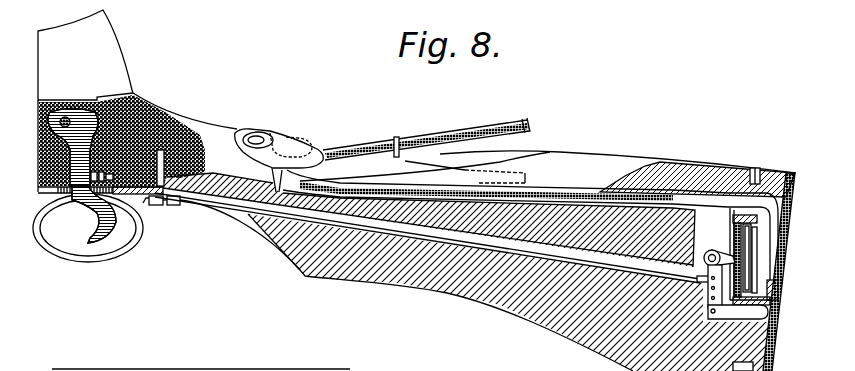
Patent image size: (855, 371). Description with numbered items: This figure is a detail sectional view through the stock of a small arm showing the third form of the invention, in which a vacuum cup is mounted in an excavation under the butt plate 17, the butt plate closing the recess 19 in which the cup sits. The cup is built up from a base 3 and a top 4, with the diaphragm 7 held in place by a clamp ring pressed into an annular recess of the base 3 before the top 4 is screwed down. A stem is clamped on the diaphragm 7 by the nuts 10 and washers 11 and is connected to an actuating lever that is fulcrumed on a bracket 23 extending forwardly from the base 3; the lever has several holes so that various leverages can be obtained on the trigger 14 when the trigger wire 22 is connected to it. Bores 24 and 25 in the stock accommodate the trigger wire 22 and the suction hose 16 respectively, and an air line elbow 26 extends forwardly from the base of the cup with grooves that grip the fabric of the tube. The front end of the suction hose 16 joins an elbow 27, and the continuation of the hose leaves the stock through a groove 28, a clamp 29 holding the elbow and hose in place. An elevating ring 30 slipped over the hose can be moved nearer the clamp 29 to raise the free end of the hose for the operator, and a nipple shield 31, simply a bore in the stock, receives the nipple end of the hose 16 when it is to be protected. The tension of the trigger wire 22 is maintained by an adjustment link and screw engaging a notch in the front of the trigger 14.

The base 3 is at (777, 293).
The top 4 is at (737, 222).
The diaphragm 7 is at (740, 233).
The nuts 10 is at (740, 248).
The washers 11 is at (760, 260).
The trigger 14 is at (90, 203).
The suction hose 16 is at (343, 152).
The butt plate 17 is at (775, 347).
The recess 19 is at (778, 205).
The trigger wire 22 is at (272, 214).
The bracket 23 is at (762, 317).
The bore 24 is at (303, 211).
The bore 25 is at (613, 192).
The air line elbow 26 is at (786, 222).
The elbow 27 is at (308, 142).
The groove 28 is at (521, 155).
The clamp 29 is at (295, 126).
The elevating ring 30 is at (400, 136).
The nipple shield 31 is at (423, 153).